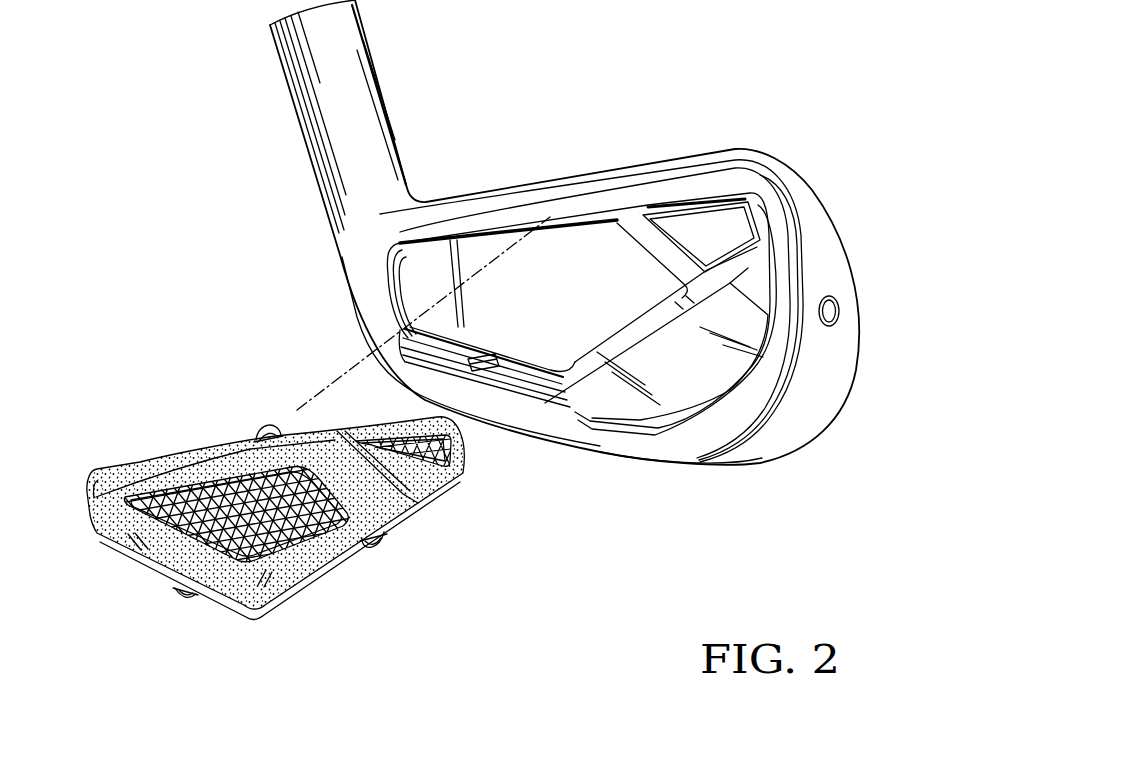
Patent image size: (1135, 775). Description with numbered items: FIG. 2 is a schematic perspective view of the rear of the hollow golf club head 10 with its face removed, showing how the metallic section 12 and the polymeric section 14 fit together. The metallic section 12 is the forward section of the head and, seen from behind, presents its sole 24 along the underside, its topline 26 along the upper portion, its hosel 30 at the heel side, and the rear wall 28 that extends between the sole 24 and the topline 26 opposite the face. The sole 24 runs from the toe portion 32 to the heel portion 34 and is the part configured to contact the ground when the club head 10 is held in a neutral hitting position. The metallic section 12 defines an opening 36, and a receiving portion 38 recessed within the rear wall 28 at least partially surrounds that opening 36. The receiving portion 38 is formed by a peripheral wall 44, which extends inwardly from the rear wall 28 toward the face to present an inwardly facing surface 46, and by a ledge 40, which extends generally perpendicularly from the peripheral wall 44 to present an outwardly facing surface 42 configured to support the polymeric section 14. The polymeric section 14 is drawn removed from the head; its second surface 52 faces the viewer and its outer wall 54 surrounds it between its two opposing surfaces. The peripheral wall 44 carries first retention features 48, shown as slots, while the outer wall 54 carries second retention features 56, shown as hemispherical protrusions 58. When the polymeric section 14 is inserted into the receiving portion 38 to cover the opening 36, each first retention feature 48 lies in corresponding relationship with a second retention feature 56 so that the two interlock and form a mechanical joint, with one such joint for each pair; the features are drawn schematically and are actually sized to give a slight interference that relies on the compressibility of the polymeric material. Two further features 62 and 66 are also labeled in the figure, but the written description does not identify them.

The golf club head 10 is at (775, 92).
The metallic section 12 is at (848, 372).
The polymeric section 14 is at (375, 514).
The sole 24 is at (693, 464).
The topline 26 is at (706, 151).
The rear wall 28 is at (730, 377).
The hosel 30 is at (348, 232).
The toe portion 32 is at (850, 347).
The heel portion 34 is at (355, 333).
The opening 36 is at (614, 245).
The receiving portion 38 is at (568, 372).
The ledge 40 is at (660, 200).
The outwardly facing surface 42 is at (407, 292).
The peripheral wall 44 is at (512, 374).
The inwardly facing surface 46 is at (542, 377).
The first retention feature 48 is at (478, 357).
The second surface 52 is at (375, 490).
The outer wall 54 is at (470, 452).
The second retention feature 56 is at (558, 230).
The protrusions 58 is at (258, 438).
The protrusion flange 62 is at (252, 441).
The upper pocket 66 is at (470, 236).